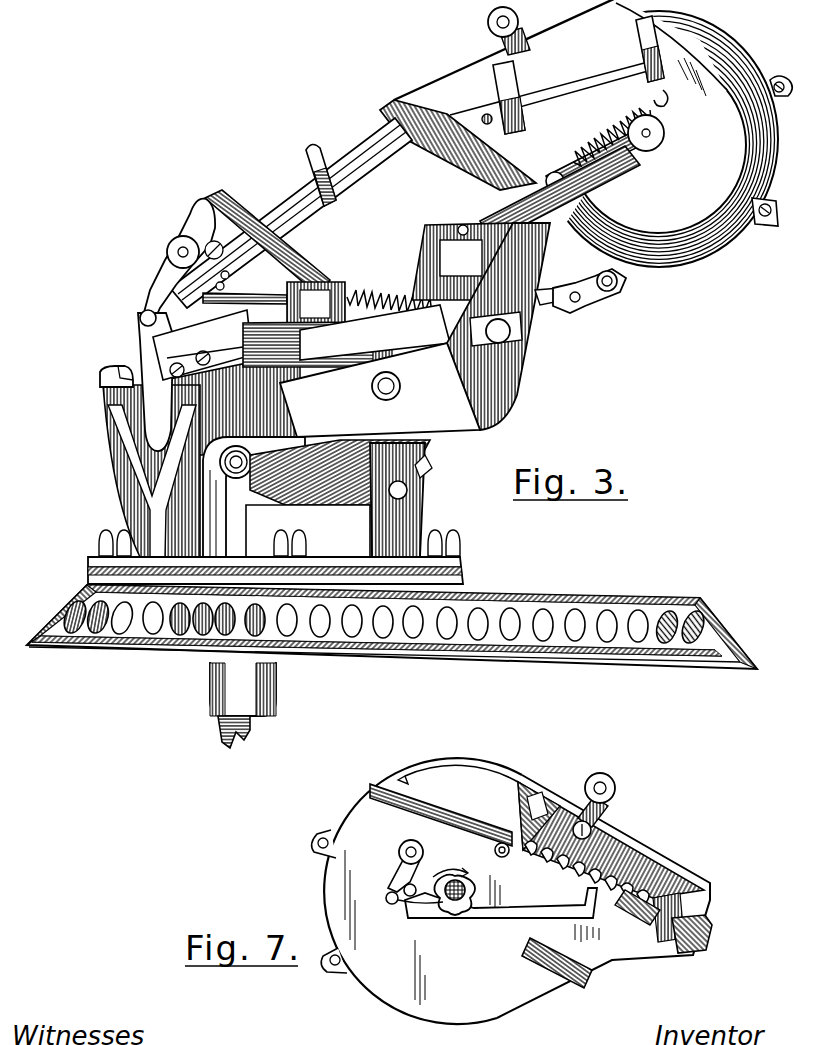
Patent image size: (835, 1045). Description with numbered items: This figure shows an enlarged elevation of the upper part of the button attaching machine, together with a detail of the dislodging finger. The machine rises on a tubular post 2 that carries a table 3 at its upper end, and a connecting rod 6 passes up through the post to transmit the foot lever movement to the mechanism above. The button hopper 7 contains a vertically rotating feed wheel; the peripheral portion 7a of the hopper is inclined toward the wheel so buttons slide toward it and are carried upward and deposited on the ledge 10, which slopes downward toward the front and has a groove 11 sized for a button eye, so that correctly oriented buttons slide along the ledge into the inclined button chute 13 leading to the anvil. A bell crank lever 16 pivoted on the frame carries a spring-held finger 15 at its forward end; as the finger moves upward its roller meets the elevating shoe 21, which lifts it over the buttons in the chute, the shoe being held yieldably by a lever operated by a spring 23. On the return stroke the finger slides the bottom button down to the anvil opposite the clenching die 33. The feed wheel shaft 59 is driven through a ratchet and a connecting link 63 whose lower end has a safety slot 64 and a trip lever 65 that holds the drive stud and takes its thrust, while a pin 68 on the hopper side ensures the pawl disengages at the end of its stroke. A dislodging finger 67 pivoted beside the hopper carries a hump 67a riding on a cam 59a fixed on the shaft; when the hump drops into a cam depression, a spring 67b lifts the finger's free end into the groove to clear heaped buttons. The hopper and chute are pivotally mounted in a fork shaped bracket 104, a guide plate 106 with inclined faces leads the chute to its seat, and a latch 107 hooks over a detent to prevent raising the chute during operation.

In FIG. 3, the tubular post 2 is at (226, 692).
In FIG. 3, the table 3 is at (567, 610).
In FIG. 3, the connecting rod 6 is at (242, 520).
In FIG. 3, the button hopper 7 is at (712, 214).
In FIG. 7, the button hopper 7 is at (333, 898).
In FIG. 3, the inclined peripheral portion of the hopper 7a is at (690, 256).
In FIG. 7, the ledge 10 is at (608, 862).
In FIG. 7, the groove 11 is at (640, 872).
In FIG. 3, the button chute 13 is at (368, 168).
In FIG. 7, the button chute 13 is at (702, 920).
In FIG. 3, the finger 15 is at (150, 294).
In FIG. 3, the bell crank lever 16 is at (200, 213).
In FIG. 3, the elevating shoe 21 is at (164, 286).
In FIG. 3, the spring 23 is at (237, 233).
In FIG. 3, the clenching die 33 is at (100, 377).
In FIG. 7, the shaft 59 is at (462, 908).
In FIG. 7, the cam 59a is at (448, 905).
In FIG. 3, the connecting link 63 is at (648, 270).
In FIG. 3, the slot 64 is at (518, 328).
In FIG. 3, the trip lever 65 is at (556, 295).
In FIG. 7, the dislodging finger 67 is at (518, 924).
In FIG. 7, the hump 67a is at (458, 915).
In FIG. 7, the spring 67b is at (400, 860).
In FIG. 7, the pin 68 is at (494, 850).
In FIG. 3, the fork shaped bracket 104 is at (546, 178).
In FIG. 3, the guide plate 106 is at (312, 194).
In FIG. 3, the latch 107 is at (540, 200).